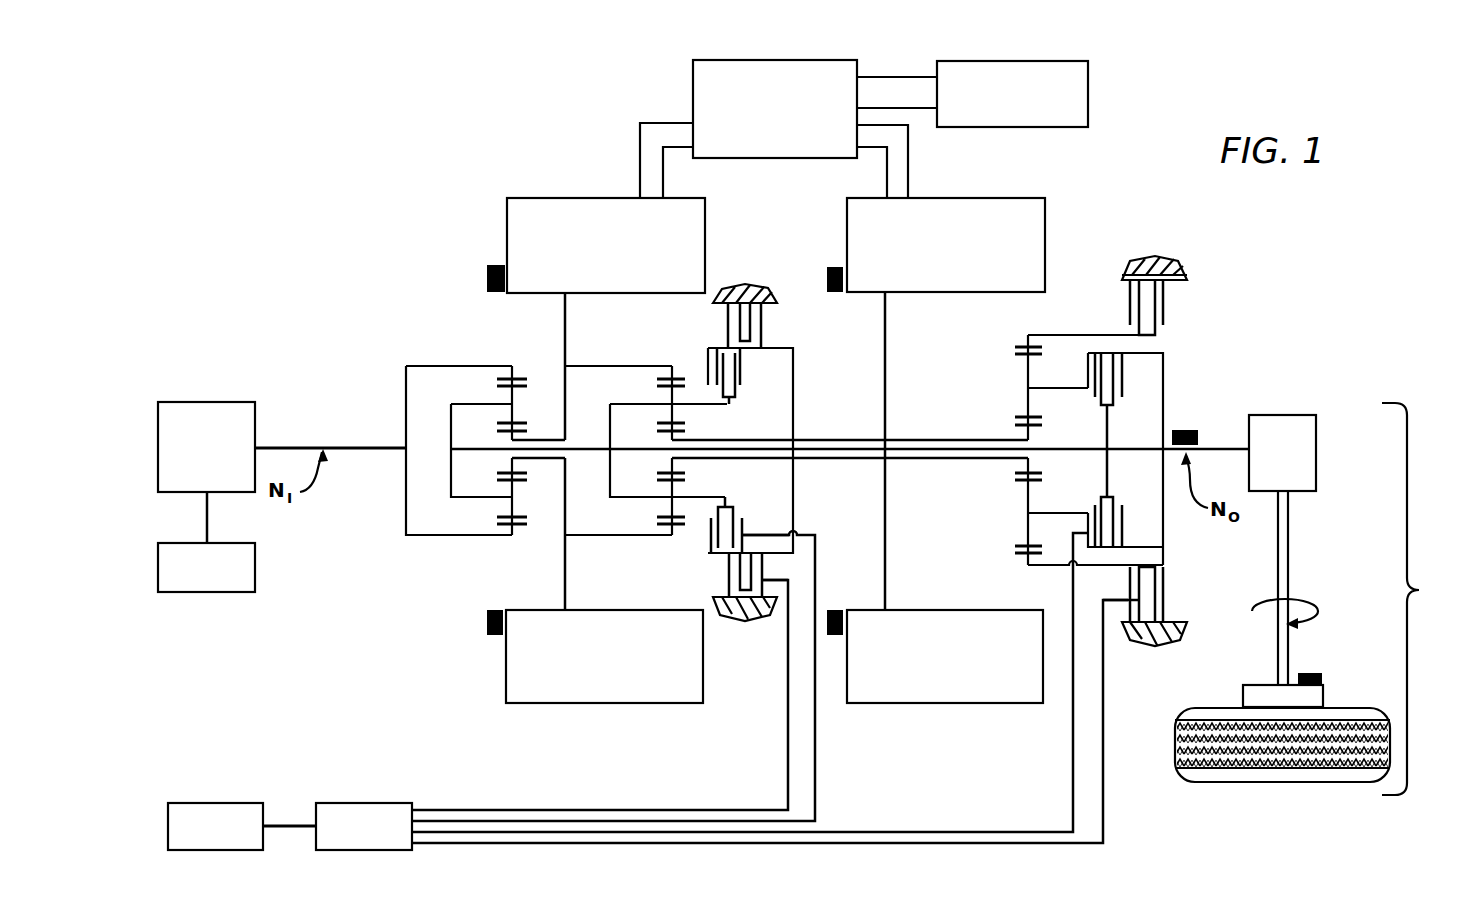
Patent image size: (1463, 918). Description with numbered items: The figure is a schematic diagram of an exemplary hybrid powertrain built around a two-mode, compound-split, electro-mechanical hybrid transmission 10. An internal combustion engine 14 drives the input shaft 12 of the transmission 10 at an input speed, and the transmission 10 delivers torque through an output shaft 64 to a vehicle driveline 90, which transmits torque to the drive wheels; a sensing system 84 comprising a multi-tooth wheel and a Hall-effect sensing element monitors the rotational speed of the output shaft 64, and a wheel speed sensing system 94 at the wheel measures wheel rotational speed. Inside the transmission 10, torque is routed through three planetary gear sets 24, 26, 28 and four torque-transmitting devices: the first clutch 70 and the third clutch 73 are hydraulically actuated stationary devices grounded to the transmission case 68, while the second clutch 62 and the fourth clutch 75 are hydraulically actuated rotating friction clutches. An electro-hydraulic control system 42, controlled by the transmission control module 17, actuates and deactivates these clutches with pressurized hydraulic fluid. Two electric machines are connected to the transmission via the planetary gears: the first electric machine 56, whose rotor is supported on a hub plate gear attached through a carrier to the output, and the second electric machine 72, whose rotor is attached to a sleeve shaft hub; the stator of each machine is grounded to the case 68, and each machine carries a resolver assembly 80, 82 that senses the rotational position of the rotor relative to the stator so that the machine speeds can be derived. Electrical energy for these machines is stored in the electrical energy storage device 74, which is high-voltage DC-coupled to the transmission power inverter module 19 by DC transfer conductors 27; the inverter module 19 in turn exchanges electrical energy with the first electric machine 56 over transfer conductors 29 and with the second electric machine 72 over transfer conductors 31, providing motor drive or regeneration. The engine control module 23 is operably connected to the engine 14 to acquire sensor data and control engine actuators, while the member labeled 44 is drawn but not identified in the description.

The transmission 10 is at (466, 162).
The input shaft 12 is at (365, 447).
The engine 14 is at (213, 402).
The transmission control module 17 is at (207, 803).
The transmission power inverter module 19 is at (693, 78).
The engine control module 23 is at (250, 585).
The first planetary gear set 24 is at (507, 360).
The second planetary gear set 26 is at (670, 360).
The DC transfer conductors 27 is at (872, 76).
The third planetary gear set 28 is at (1023, 333).
The transfer conductors 29 is at (640, 158).
The transfer conductors 31 is at (908, 153).
The electro-hydraulic control system 42 is at (333, 803).
The carrier member 44 is at (610, 478).
The first electric machine MG-A 56 is at (507, 233).
The clutch C2 62 is at (1128, 395).
The output shaft 64 is at (1218, 446).
The transmission case 68 is at (745, 289).
The clutch C1 70 is at (1114, 302).
The second electric machine MG-B 72 is at (1045, 215).
The clutch C3 73 is at (768, 327).
The electrical energy storage device 74 is at (1088, 82).
The clutch C4 75 is at (750, 381).
The resolver assembly 80 is at (487, 280).
The resolver assembly 82 is at (835, 267).
The sensing system 84 is at (1186, 430).
The driveline 90 is at (1419, 590).
The wheel speed sensing system 94 is at (1310, 673).